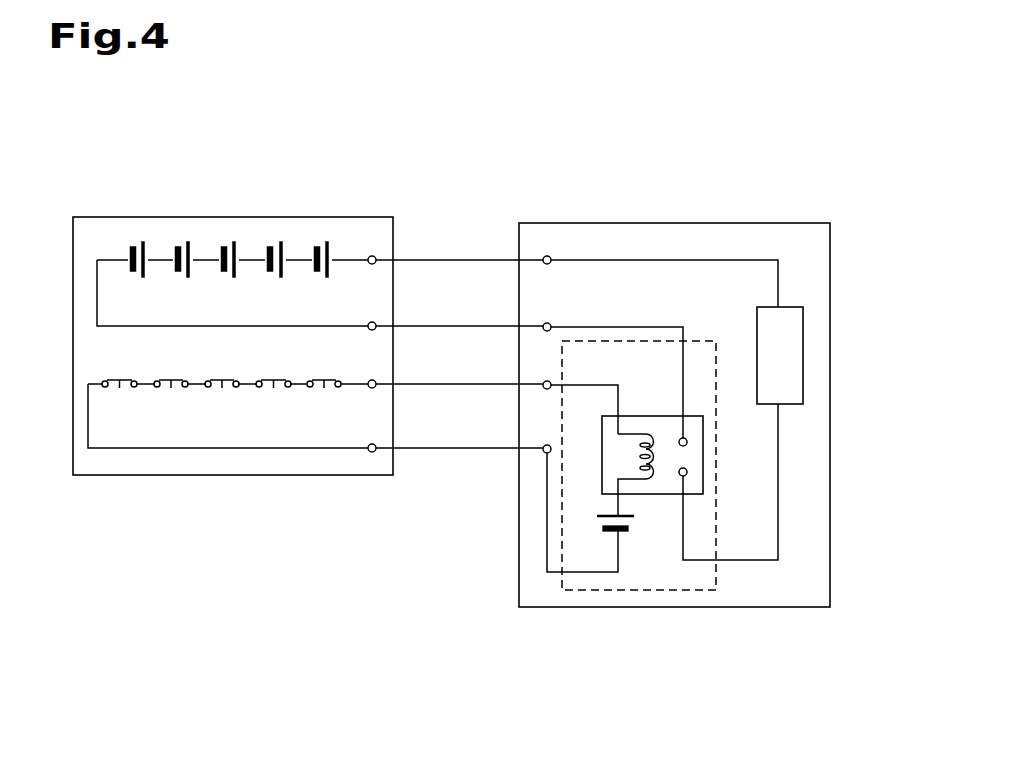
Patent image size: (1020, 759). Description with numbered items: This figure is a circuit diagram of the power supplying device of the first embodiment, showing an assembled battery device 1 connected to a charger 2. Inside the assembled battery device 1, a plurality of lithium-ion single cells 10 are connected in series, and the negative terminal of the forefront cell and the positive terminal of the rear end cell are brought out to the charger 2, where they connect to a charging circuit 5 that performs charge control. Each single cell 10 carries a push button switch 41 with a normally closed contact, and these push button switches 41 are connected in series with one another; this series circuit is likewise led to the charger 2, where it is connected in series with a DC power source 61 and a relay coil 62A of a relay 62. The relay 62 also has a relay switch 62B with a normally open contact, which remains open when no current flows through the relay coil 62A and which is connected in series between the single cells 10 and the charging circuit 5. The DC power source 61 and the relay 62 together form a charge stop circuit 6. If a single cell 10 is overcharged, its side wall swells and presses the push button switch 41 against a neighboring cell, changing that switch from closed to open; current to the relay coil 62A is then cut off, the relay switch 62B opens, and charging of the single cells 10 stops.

The assembled battery device 1 is at (297, 212).
The single cell 10 is at (140, 240).
The push button switch 41 is at (115, 392).
The charger 2 is at (608, 218).
The charging circuit 5 is at (803, 358).
The charge stop circuit 6 is at (571, 600).
The DC power source 61 is at (620, 535).
The relay 62 is at (652, 500).
The relay coil 62A is at (631, 433).
The relay switch 62B is at (686, 437).